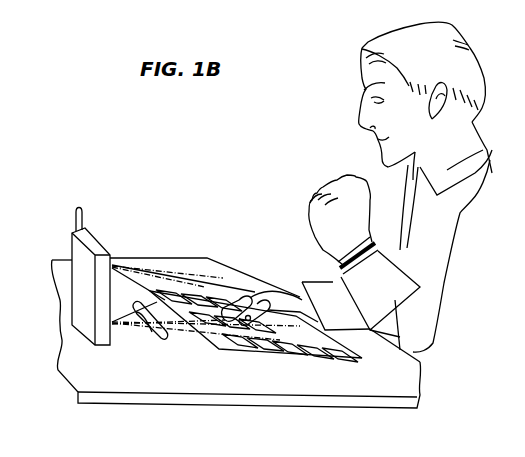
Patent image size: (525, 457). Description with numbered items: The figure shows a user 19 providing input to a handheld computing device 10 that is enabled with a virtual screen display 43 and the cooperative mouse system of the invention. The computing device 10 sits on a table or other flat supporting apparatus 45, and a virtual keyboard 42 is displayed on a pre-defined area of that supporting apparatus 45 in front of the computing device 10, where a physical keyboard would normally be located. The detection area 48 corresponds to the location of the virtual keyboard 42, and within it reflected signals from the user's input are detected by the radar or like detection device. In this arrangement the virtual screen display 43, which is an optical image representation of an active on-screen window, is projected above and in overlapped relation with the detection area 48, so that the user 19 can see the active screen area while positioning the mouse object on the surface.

The computing device 10 is at (70, 253).
The user 19 is at (358, 123).
The virtual keyboard 42 is at (363, 363).
The virtual screen display 43 is at (222, 306).
The supporting apparatus 45 is at (129, 372).
The detection area 48 is at (154, 341).